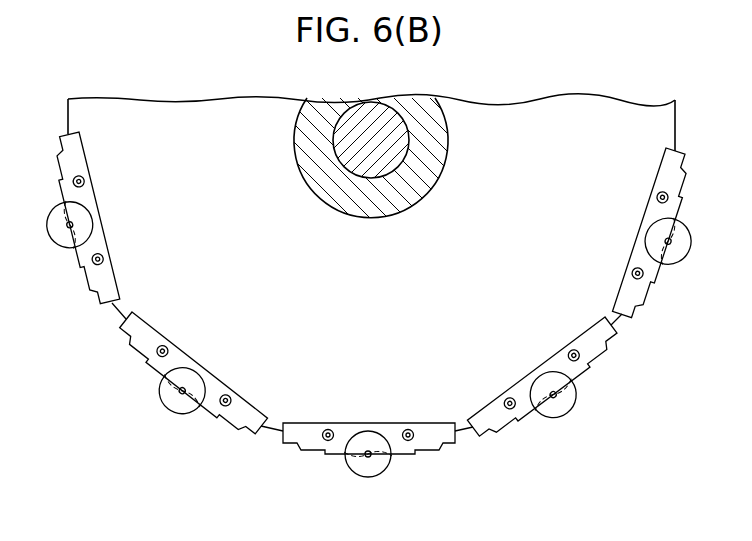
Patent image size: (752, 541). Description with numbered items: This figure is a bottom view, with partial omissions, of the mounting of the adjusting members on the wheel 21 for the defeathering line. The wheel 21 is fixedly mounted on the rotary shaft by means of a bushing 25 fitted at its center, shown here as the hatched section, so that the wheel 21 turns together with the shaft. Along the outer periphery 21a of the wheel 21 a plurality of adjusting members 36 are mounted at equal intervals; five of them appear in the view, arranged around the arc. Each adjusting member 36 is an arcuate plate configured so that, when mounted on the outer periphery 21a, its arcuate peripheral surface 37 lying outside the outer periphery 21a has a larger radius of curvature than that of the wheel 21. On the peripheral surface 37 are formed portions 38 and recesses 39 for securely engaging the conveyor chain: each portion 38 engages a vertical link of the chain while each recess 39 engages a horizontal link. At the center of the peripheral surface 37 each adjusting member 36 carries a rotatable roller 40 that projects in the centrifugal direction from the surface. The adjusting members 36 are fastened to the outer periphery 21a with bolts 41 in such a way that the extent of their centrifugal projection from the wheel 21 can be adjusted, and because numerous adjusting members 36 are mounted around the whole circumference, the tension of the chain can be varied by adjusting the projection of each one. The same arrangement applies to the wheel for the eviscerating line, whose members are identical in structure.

The wheel for the defeathering line 21 is at (586, 110).
The outer periphery 21a is at (68, 99).
The bushing 25 is at (424, 108).
The adjusting member 36 is at (104, 284).
The arcuate peripheral surface 37 is at (160, 372).
The portion 38 is at (90, 260).
The recess 39 is at (66, 153).
The rotatable roller 40 is at (62, 216).
The bolt 41 is at (168, 350).